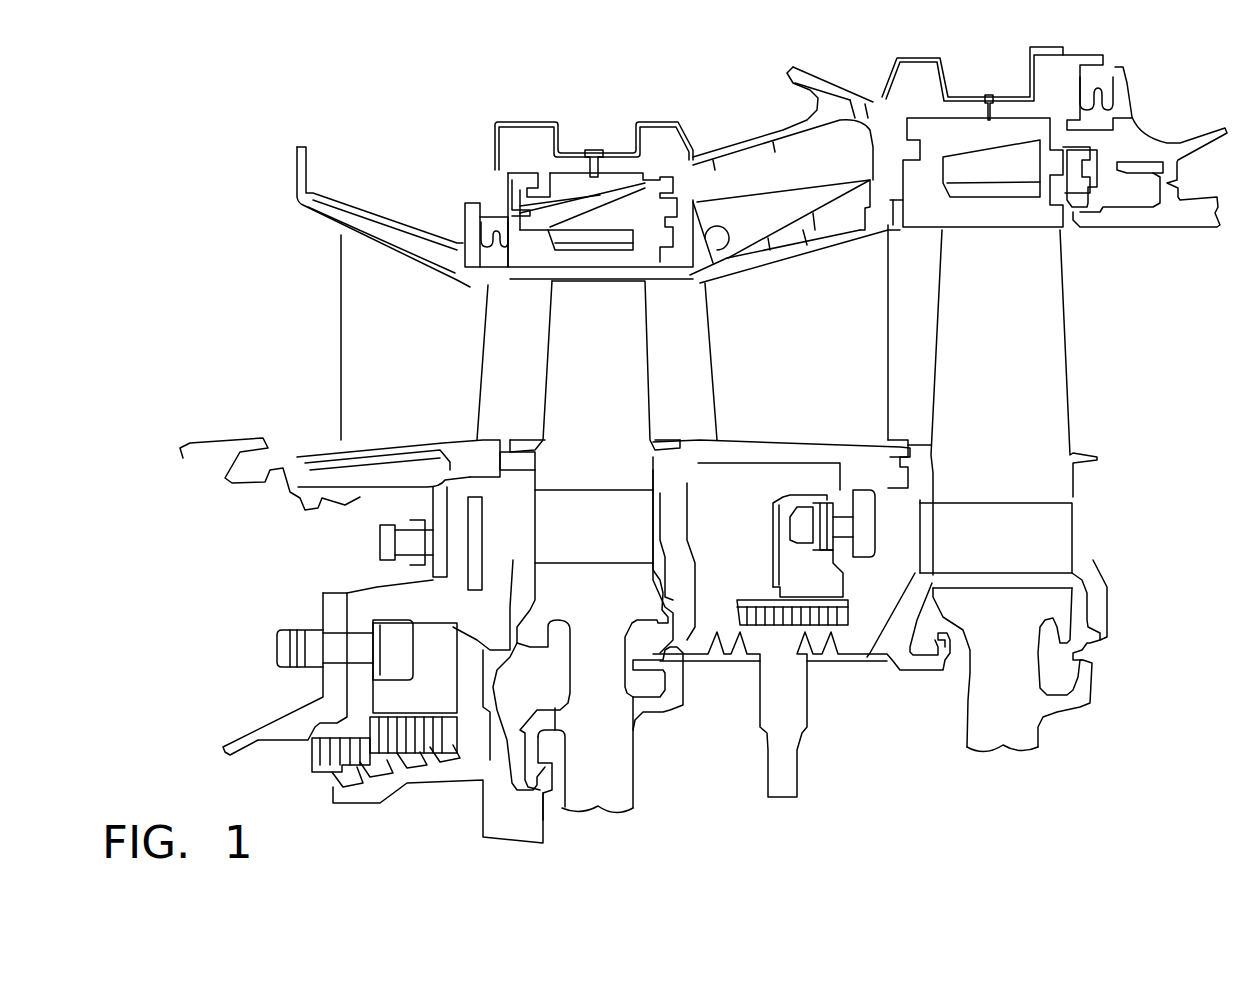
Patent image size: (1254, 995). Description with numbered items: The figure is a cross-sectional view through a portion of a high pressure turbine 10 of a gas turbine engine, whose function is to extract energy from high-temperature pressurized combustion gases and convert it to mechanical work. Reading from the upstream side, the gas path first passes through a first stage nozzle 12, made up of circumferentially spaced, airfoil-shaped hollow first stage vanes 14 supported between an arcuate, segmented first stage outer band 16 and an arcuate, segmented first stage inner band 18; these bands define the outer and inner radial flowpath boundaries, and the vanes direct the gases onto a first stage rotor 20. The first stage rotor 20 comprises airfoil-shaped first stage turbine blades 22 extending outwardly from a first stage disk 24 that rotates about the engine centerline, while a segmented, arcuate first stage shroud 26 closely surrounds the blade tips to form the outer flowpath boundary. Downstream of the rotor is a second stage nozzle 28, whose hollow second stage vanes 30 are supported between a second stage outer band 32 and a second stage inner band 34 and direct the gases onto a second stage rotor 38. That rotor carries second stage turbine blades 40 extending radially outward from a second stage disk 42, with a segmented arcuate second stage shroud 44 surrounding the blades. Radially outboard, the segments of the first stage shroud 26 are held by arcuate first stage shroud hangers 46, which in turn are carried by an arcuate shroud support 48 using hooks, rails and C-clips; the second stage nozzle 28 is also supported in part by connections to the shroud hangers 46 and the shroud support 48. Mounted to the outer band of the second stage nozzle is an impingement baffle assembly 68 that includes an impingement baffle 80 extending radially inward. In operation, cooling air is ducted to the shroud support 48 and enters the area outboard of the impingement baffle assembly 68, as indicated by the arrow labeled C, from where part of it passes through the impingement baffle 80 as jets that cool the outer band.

The high pressure turbine 10 is at (418, 88).
The first stage nozzle 12 is at (298, 297).
The first stage vanes 14 is at (392, 367).
The first stage outer band 16 is at (299, 205).
The first stage inner band 18 is at (290, 457).
The first stage rotor 20 is at (538, 395).
The first stage turbine blades 22 is at (580, 384).
The first stage disk 24 is at (582, 609).
The first stage shroud 26 is at (545, 283).
The second stage nozzle 28 is at (700, 388).
The second stage vanes 30 is at (780, 364).
The second stage outer band 32 is at (905, 228).
The second stage inner band 34 is at (760, 455).
The second stage rotor 38 is at (1117, 384).
The second stage turbine blades 40 is at (987, 377).
The second stage disk 42 is at (989, 627).
The second stage shroud 44 is at (1065, 227).
The first stage shroud hangers 46 is at (503, 195).
The shroud support 48 is at (660, 133).
The impingement baffle assembly 68 is at (797, 170).
The impingement baffle 80 is at (712, 265).